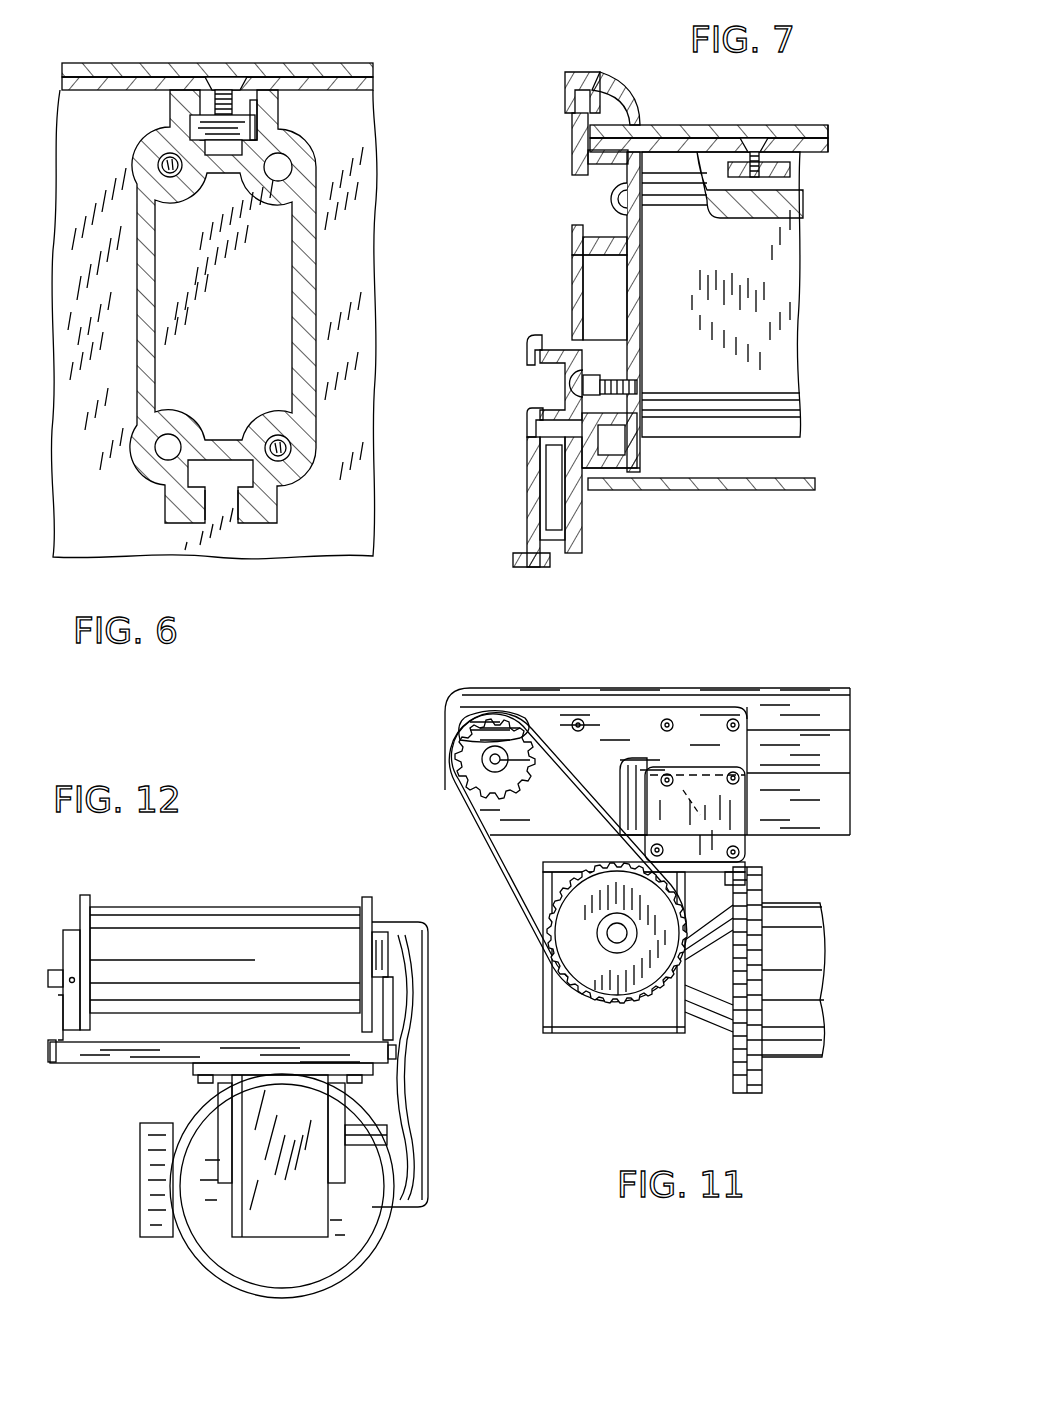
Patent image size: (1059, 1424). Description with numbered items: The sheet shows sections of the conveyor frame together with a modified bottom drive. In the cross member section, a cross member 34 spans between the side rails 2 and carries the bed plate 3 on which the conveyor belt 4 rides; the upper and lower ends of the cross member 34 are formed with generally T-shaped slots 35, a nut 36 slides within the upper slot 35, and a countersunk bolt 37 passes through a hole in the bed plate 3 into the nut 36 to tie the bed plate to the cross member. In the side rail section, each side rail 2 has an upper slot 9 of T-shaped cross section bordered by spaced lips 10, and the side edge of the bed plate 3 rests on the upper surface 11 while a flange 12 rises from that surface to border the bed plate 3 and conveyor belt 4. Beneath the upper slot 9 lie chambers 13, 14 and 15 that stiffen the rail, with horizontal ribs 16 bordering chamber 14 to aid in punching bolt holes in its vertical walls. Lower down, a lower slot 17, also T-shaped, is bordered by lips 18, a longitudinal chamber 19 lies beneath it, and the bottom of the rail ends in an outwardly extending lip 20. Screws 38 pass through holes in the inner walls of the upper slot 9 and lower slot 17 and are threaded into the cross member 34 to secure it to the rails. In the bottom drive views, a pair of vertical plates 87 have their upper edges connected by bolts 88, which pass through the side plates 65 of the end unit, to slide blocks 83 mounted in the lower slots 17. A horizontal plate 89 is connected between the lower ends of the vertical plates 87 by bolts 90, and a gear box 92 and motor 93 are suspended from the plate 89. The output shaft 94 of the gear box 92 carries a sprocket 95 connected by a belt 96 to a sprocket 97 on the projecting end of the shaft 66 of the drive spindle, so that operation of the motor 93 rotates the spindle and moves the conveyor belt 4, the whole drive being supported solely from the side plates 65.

In FIG. 6, the side rail 2 is at (376, 200).
In FIG. 6, the bed plate 3 is at (355, 65).
In FIG. 7, the bed plate 3 is at (815, 128).
In FIG. 6, the conveyor belt 4 is at (320, 63).
In FIG. 7, the conveyor belt 4 is at (805, 125).
In FIG. 7, the upper slot 9 is at (575, 225).
In FIG. 7, the lips 10 is at (572, 165).
In FIG. 7, the upper surface 11 is at (640, 135).
In FIG. 7, the flange 12 is at (572, 128).
In FIG. 7, the chamber 13 is at (633, 290).
In FIG. 7, the chamber 14 is at (640, 378).
In FIG. 7, the chamber 15 is at (625, 445).
In FIG. 7, the horizontal ribs 16 is at (630, 355).
In FIG. 7, the lower slot 17 is at (548, 400).
In FIG. 7, the lips 18 is at (526, 345).
In FIG. 7, the longitudinal chamber 19 is at (560, 520).
In FIG. 7, the lip 20 is at (513, 560).
In FIG. 7, the cross member 34 is at (790, 293).
In FIG. 6, the T-shaped slot 35 is at (243, 110).
In FIG. 7, the T-shaped slot 35 is at (800, 165).
In FIG. 6, the nut 36 is at (175, 118).
In FIG. 7, the nut 36 is at (790, 178).
In FIG. 6, the countersunk bolt 37 is at (217, 80).
In FIG. 7, the countersunk bolt 37 is at (755, 138).
In FIG. 7, the screw 38 is at (613, 198).
In FIG. 11, the side member 65 is at (612, 713).
In FIG. 12, the side member 65 is at (78, 912).
In FIG. 11, the shaft 66 is at (490, 760).
In FIG. 11, the slide block 83 is at (695, 814).
In FIG. 11, the vertical plate 87 is at (745, 838).
In FIG. 12, the vertical plate 87 is at (62, 1007).
In FIG. 11, the bolt 88 is at (730, 775).
In FIG. 12, the bolt 88 is at (50, 977).
In FIG. 11, the horizontal plate 89 is at (560, 868).
In FIG. 12, the horizontal plate 89 is at (120, 1063).
In FIG. 12, the bolt 90 is at (48, 1052).
In FIG. 11, the gear box 92 is at (612, 1035).
In FIG. 12, the gear box 92 is at (250, 1230).
In FIG. 11, the motor 93 is at (812, 962).
In FIG. 12, the motor 93 is at (368, 1250).
In FIG. 11, the output shaft 94 is at (610, 938).
In FIG. 12, the output shaft 94 is at (385, 1137).
In FIG. 11, the sprocket 95 is at (560, 905).
In FIG. 11, the belt 96 is at (495, 855).
In FIG. 12, the belt 96 is at (398, 1093).
In FIG. 11, the sprocket 97 is at (488, 780).